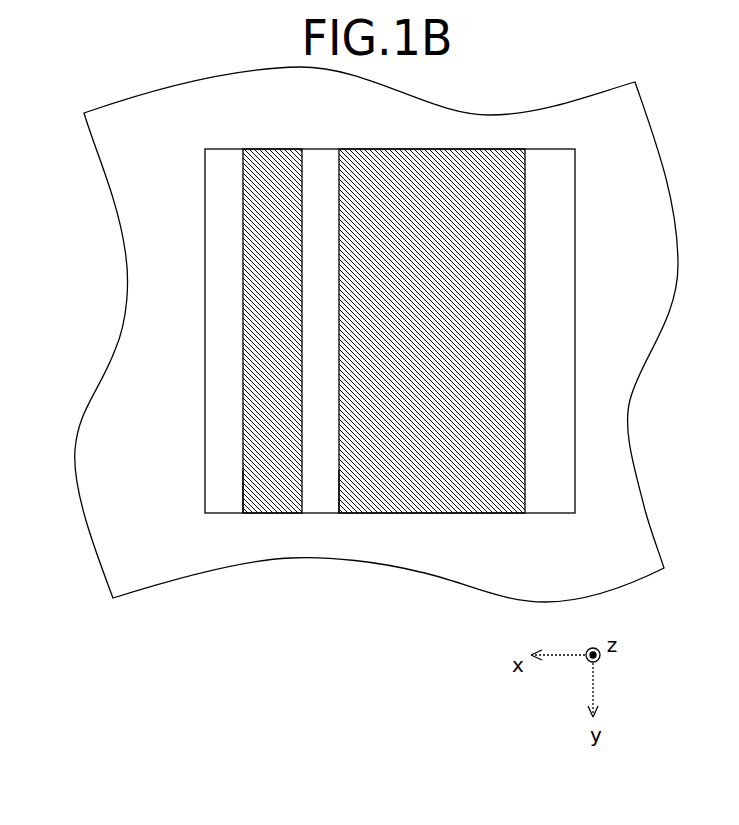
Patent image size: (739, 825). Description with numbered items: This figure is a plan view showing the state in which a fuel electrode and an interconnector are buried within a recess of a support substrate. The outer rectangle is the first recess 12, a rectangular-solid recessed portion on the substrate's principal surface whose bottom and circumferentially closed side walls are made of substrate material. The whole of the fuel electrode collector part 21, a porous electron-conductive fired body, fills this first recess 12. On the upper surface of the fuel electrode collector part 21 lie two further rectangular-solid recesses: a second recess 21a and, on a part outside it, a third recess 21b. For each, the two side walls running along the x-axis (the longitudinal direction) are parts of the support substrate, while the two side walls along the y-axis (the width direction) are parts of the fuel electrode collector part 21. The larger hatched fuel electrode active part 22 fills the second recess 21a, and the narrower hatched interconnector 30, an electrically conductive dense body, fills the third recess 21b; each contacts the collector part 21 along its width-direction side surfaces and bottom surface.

The first recess 12 is at (476, 536).
The fuel electrode collector part 21 is at (236, 424).
The fuel electrode active part 22 is at (387, 163).
The interconnector 30 is at (286, 163).
The second recess 21a is at (342, 490).
The third recess 21b is at (245, 490).